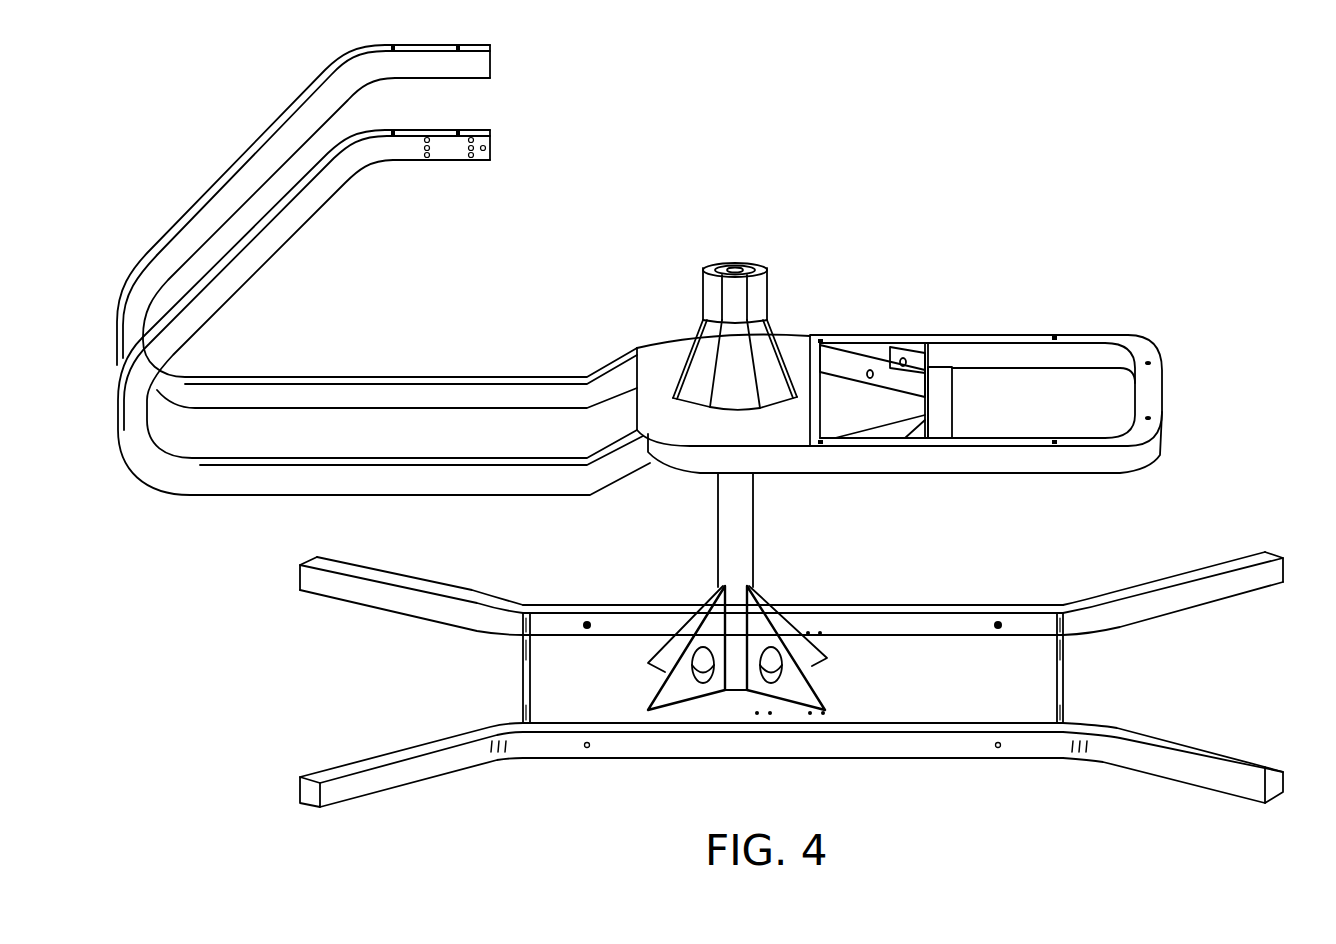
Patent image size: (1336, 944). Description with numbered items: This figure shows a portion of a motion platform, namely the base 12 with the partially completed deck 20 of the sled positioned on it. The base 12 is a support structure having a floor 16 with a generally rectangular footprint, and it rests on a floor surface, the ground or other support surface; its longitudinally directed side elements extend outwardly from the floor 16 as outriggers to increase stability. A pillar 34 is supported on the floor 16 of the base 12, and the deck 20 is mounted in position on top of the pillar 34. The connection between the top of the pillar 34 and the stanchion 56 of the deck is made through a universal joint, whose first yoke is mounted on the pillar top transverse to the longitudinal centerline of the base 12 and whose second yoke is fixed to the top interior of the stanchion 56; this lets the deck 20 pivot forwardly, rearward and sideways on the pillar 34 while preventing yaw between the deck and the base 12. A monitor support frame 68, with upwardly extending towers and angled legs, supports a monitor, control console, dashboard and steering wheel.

The base 12 is at (799, 640).
The floor 16 is at (950, 682).
The deck 20 is at (792, 342).
The pillar 34 is at (753, 527).
The stanchion 56 is at (703, 350).
The monitor support frame 68 is at (283, 126).